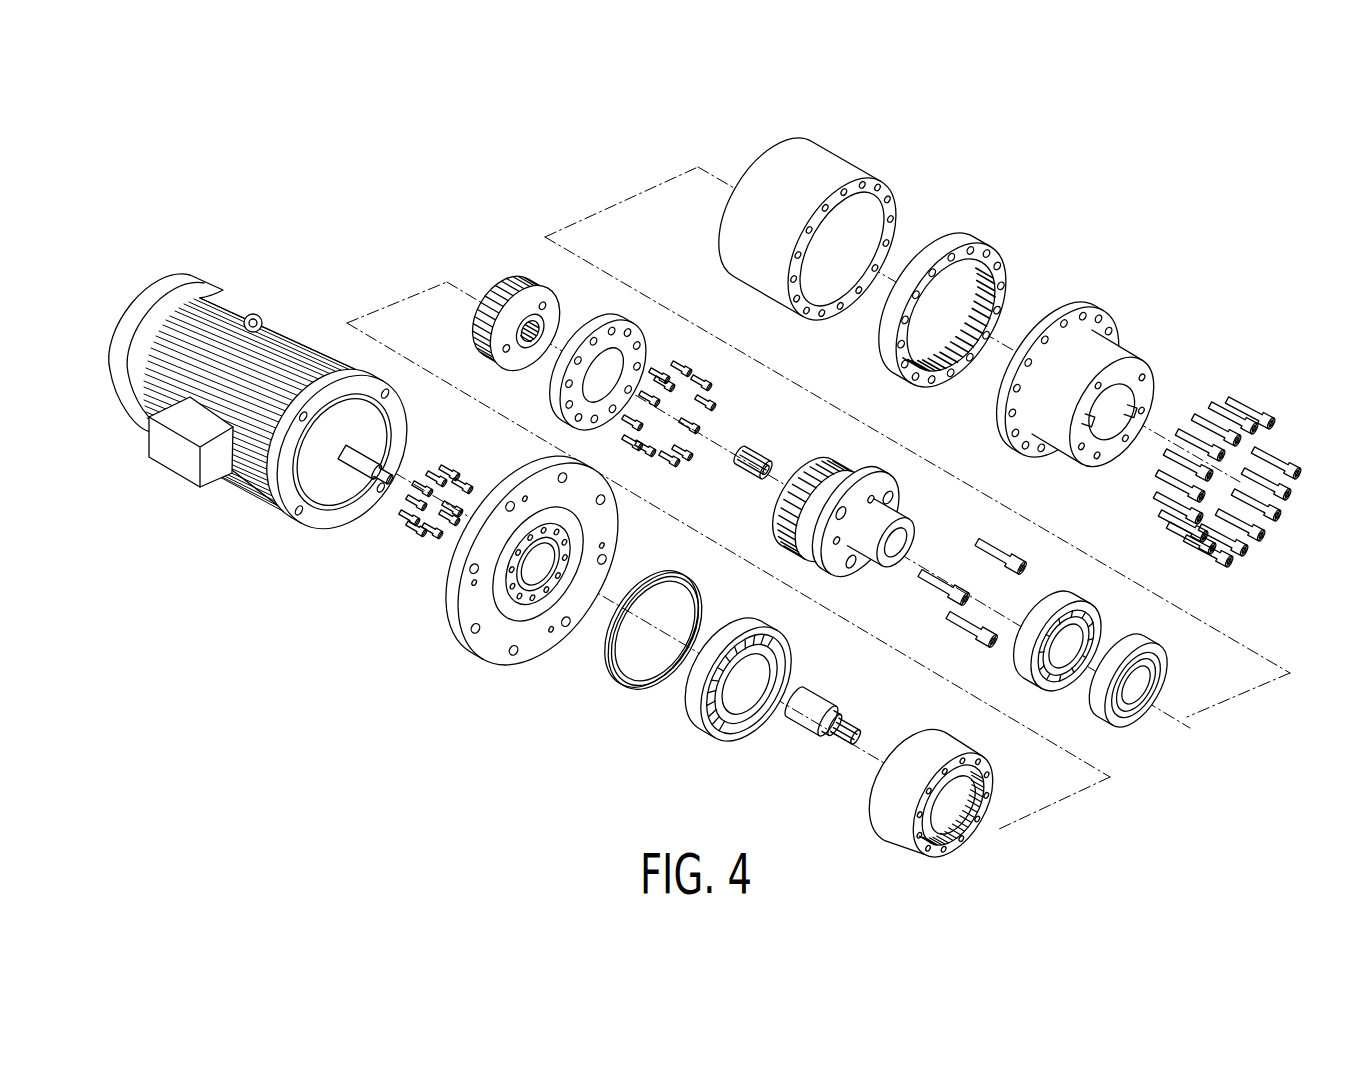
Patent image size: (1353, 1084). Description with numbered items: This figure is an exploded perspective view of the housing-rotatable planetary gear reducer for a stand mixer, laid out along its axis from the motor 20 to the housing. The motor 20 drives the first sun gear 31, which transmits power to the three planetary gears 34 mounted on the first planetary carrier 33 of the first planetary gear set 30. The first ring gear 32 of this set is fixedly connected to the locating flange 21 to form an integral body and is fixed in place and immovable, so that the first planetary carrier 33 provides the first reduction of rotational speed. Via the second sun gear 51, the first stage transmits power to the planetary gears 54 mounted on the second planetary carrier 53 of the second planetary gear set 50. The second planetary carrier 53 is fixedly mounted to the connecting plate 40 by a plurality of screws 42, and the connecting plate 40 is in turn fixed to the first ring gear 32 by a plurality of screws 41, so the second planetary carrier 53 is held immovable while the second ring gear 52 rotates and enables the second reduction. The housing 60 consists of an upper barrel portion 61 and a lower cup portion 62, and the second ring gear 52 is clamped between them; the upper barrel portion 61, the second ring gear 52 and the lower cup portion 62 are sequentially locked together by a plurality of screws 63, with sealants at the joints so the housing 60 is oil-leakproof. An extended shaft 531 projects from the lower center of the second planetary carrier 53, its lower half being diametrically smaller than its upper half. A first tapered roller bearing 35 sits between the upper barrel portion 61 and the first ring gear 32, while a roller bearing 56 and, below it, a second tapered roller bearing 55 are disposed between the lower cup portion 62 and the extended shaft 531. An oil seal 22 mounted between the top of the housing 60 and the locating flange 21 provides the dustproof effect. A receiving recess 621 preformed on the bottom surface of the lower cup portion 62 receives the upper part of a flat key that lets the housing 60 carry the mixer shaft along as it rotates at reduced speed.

The motor 20 is at (297, 322).
The locating flange 21 is at (463, 620).
The oil seal 22 is at (627, 687).
The first planetary gear set 30 is at (501, 305).
The first sun gear 31 is at (847, 753).
The first ring gear 32 is at (903, 830).
The first planetary carrier 33 is at (540, 307).
The planetary gears 34 is at (493, 337).
The first tapered roller bearing 35 is at (697, 717).
The connecting plate 40 is at (558, 385).
The screws 41 is at (687, 367).
The screws 42 is at (993, 543).
The second planetary gear set 50 is at (877, 504).
The second sun gear 51 is at (757, 480).
The second ring gear 52 is at (940, 243).
The second planetary carrier 53 is at (877, 487).
The planetary gears 54 is at (800, 547).
The second tapered roller bearing 55 is at (1097, 707).
The roller bearing 56 is at (1023, 658).
The housing 60 is at (999, 331).
The upper barrel portion 61 is at (768, 263).
The lower cup portion 62 is at (1109, 397).
The screws 63 is at (1253, 420).
The extended shaft 531 is at (913, 537).
The receiving recess 621 is at (1140, 397).